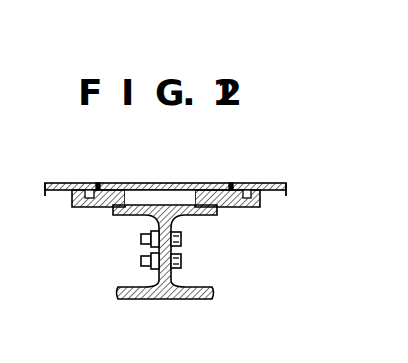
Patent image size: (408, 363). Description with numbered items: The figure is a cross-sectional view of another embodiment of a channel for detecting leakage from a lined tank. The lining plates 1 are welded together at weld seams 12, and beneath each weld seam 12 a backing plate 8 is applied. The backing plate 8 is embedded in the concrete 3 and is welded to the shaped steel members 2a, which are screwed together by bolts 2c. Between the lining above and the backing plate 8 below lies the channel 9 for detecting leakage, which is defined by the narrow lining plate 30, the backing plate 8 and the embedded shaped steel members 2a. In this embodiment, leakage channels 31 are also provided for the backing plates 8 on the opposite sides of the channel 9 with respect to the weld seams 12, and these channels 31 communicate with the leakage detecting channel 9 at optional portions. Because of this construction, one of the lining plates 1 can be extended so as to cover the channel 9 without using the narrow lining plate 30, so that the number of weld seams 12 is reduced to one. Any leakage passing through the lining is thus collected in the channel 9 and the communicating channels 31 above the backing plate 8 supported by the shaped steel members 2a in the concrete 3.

The lining plate 1 is at (62, 184).
The weld seam 12 is at (97, 185).
The narrow lining plate 30 is at (130, 184).
The channel for detecting leakage 9 is at (174, 192).
The leakage channel 31 is at (252, 185).
The backing plate 8 is at (103, 205).
The concrete 3 is at (116, 269).
The bolt 2c is at (183, 240).
The shaped steel member 2a is at (174, 299).